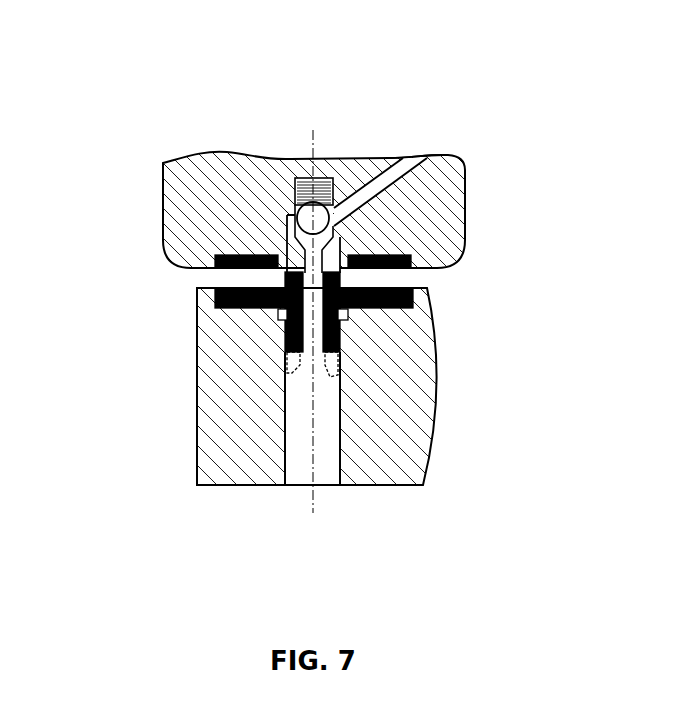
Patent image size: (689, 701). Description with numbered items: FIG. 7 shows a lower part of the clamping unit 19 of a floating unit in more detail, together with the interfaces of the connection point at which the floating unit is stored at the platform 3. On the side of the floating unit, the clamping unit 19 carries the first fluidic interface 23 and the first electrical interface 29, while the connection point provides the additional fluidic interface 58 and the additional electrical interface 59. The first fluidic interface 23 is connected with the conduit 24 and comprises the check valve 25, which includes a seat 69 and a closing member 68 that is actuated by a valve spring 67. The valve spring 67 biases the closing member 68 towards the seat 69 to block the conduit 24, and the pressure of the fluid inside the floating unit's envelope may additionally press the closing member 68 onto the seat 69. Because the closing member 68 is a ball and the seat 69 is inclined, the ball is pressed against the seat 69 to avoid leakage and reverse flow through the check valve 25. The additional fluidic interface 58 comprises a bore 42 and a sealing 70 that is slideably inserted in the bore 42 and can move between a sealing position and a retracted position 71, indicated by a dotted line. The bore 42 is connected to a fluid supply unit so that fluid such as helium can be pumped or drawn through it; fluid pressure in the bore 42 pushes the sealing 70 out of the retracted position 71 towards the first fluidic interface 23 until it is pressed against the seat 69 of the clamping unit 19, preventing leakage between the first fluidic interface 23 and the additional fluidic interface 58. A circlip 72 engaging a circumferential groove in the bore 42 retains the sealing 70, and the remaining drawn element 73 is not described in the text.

The platform 3 is at (235, 462).
The clamping unit 19 is at (467, 157).
The first fluidic interface 23 is at (362, 147).
The conduit 24 is at (374, 192).
The check valve 25 is at (257, 193).
The first electrical interface 29 is at (200, 268).
The bore 42 is at (300, 462).
The additional fluidic interface 58 is at (355, 377).
The additional electrical interface 59 is at (240, 308).
The valve spring 67 is at (317, 204).
The closing member 68 is at (297, 208).
The seat 69 is at (290, 237).
The sealing 70 is at (343, 340).
The retracted position 71 is at (287, 368).
The circlip 72 is at (348, 315).
The stem bore 73 is at (343, 400).